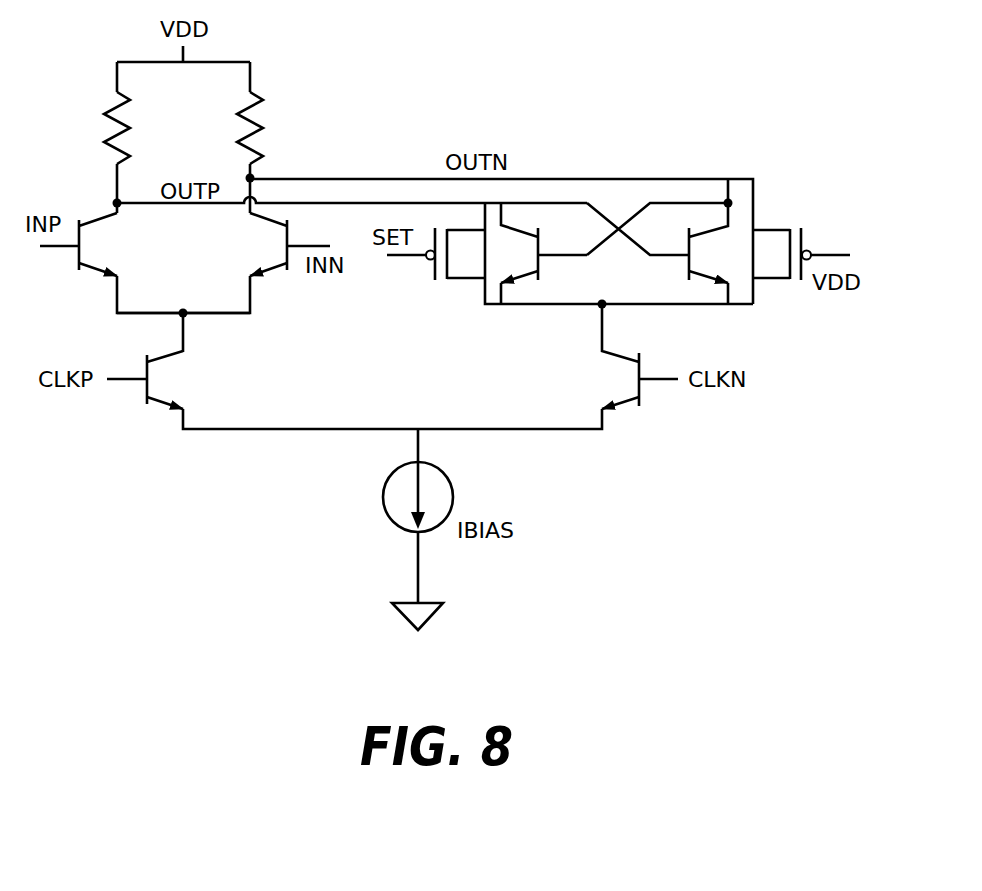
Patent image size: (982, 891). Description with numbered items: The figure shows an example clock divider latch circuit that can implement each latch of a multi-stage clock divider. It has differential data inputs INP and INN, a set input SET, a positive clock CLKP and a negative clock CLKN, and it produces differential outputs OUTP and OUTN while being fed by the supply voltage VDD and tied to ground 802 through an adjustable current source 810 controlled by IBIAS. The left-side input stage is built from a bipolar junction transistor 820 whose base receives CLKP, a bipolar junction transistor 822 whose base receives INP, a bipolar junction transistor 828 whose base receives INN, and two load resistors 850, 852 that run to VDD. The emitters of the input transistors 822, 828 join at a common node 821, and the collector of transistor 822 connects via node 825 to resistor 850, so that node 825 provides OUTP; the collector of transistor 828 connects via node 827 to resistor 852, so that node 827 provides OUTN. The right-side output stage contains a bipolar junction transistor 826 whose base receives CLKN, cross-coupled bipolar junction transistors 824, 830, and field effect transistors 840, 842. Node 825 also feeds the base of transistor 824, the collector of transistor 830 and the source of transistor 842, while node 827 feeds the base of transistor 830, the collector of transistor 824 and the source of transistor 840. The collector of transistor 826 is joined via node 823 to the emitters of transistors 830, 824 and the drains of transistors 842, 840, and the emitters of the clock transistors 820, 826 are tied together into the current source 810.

The ground 802 is at (435, 602).
The adjustable current source 810 is at (437, 485).
The bipolar junction transistor 820 is at (163, 355).
The common emitter node of input pair 821 is at (152, 312).
The bipolar junction transistor 822 is at (96, 220).
The node 823 is at (548, 305).
The bipolar junction transistor 824 is at (703, 242).
The node 825 is at (630, 241).
The bipolar junction transistor 826 is at (612, 352).
The node 827 is at (655, 178).
The bipolar junction transistor 828 is at (268, 228).
The bipolar junction transistor 830 is at (526, 240).
The field effect transistor 840 is at (775, 228).
The field effect transistor 842 is at (458, 283).
The resistor 850 is at (108, 107).
The resistor 852 is at (258, 100).